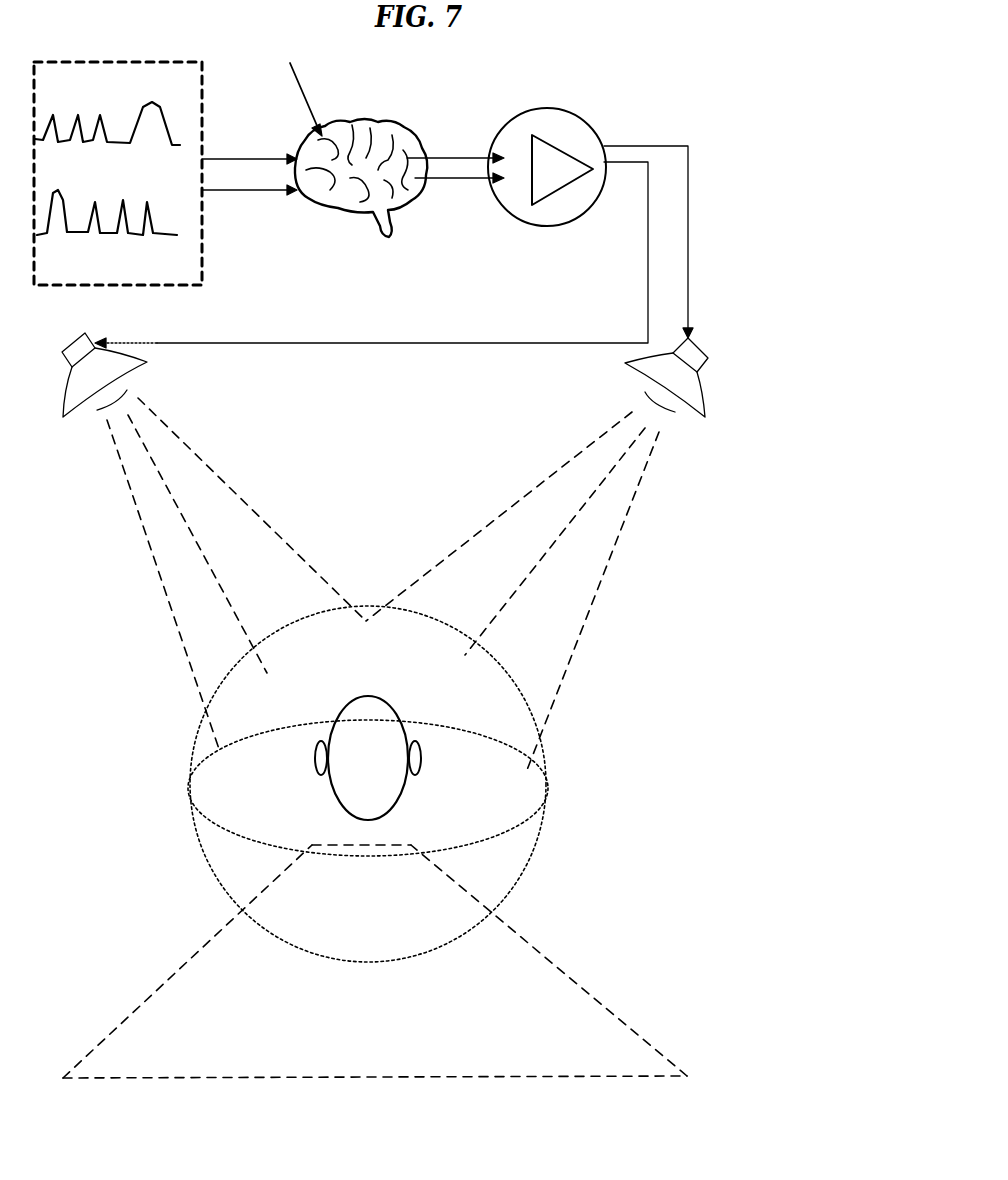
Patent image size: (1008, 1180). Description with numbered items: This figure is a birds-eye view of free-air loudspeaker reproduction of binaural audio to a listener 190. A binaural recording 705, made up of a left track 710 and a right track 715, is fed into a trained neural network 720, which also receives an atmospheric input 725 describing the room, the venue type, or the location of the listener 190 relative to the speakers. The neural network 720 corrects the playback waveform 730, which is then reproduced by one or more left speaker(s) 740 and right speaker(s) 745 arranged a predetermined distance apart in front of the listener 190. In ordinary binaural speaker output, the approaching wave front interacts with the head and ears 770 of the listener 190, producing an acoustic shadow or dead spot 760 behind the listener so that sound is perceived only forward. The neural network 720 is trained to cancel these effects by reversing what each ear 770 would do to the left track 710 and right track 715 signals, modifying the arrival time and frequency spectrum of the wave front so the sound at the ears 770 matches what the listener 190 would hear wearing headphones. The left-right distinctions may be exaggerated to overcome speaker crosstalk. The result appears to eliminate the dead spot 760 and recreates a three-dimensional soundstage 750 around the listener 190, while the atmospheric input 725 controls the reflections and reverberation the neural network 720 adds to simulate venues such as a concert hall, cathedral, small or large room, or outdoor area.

The binaural recording 705 is at (128, 53).
The left track 710 is at (129, 96).
The right track 715 is at (132, 261).
The neural network 720 is at (433, 260).
The atmospheric input 725 is at (332, 60).
The playback waveform 730 is at (595, 105).
The left speaker(s) 740 is at (178, 395).
The right speaker(s) 745 is at (620, 395).
The three-dimensional soundstage 750 is at (437, 678).
The dead spot 760 is at (427, 1003).
The ears 770 is at (448, 790).
The listener 190 is at (383, 781).